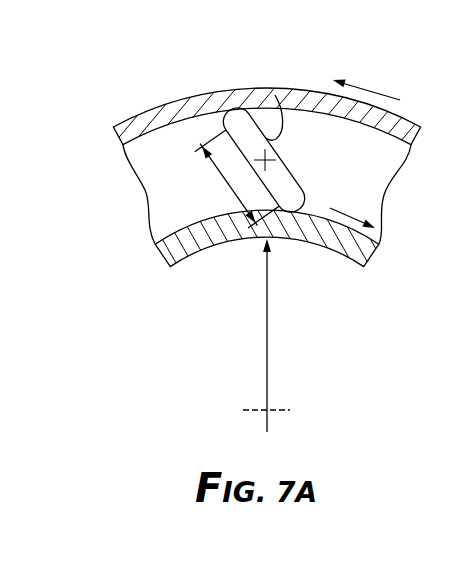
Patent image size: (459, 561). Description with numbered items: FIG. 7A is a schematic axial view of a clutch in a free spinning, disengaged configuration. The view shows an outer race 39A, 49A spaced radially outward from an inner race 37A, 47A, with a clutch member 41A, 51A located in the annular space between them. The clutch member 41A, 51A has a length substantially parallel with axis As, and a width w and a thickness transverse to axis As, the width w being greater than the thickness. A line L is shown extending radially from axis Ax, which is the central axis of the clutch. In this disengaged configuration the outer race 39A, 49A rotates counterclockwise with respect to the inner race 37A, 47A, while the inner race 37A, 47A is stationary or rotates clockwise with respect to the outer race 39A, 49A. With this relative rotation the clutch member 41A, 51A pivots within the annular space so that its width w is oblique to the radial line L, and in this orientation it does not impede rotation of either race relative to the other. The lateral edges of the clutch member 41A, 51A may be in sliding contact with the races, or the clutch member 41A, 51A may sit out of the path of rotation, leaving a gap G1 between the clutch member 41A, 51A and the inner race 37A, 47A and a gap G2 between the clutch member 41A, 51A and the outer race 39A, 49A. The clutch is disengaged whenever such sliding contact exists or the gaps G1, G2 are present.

The outer race 39A is at (279, 95).
The outer race 49A is at (215, 98).
The clutch member 41A is at (316, 127).
The clutch member 51A is at (283, 108).
The inner race 37A is at (217, 235).
The inner race 47A is at (157, 247).
The gap G1 is at (275, 95).
The gap G2 is at (312, 202).
The axis As is at (288, 153).
The width w is at (226, 184).
The line L is at (267, 293).
The axis Ax is at (256, 397).